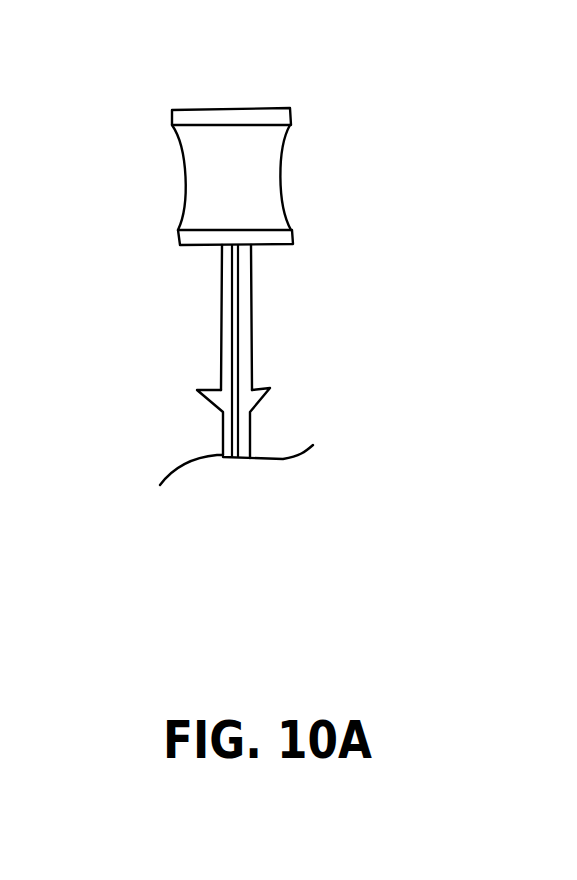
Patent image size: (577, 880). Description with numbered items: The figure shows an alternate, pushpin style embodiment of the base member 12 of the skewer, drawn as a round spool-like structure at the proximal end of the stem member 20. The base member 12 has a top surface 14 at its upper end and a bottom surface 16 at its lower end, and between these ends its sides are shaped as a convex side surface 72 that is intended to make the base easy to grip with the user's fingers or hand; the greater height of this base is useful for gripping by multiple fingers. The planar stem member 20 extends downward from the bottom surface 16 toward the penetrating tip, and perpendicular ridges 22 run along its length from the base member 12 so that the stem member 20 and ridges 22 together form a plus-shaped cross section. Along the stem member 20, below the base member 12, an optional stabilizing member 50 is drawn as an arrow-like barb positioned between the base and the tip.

The base member 12 is at (241, 177).
The top surface 14 is at (257, 105).
The bottom surface 16 is at (273, 247).
The stem member 20 is at (250, 343).
The ridges 22 is at (235, 365).
The stabilizing member 50 is at (267, 388).
The convex side surface 72 is at (193, 198).